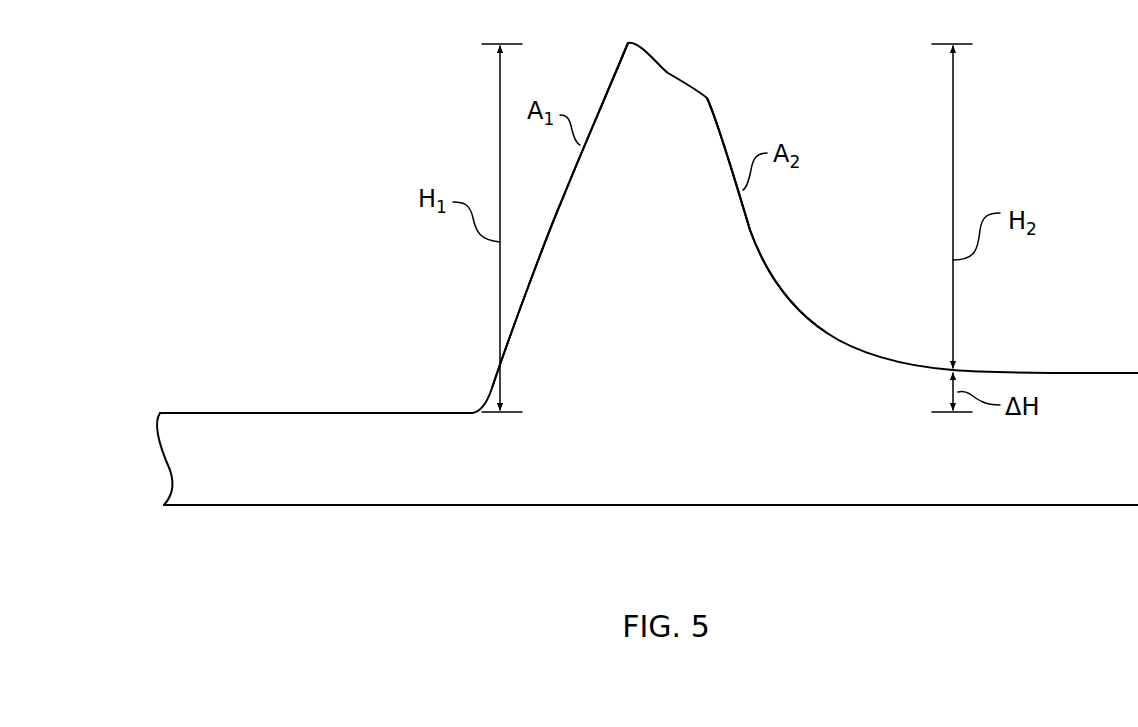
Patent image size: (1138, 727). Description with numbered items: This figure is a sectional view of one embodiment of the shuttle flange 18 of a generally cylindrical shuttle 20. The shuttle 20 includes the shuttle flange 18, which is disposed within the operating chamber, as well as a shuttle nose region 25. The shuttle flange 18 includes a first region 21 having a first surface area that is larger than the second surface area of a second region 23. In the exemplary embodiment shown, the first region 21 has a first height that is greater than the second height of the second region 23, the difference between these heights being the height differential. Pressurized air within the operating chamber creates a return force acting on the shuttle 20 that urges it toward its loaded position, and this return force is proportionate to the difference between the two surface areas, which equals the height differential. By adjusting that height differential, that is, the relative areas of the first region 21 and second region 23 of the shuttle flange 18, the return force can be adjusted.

The shuttle flange 18 is at (670, 73).
The shuttle 20 is at (450, 505).
The first region 21 is at (507, 357).
The second region 23 is at (750, 230).
The shuttle nose region 25 is at (258, 413).